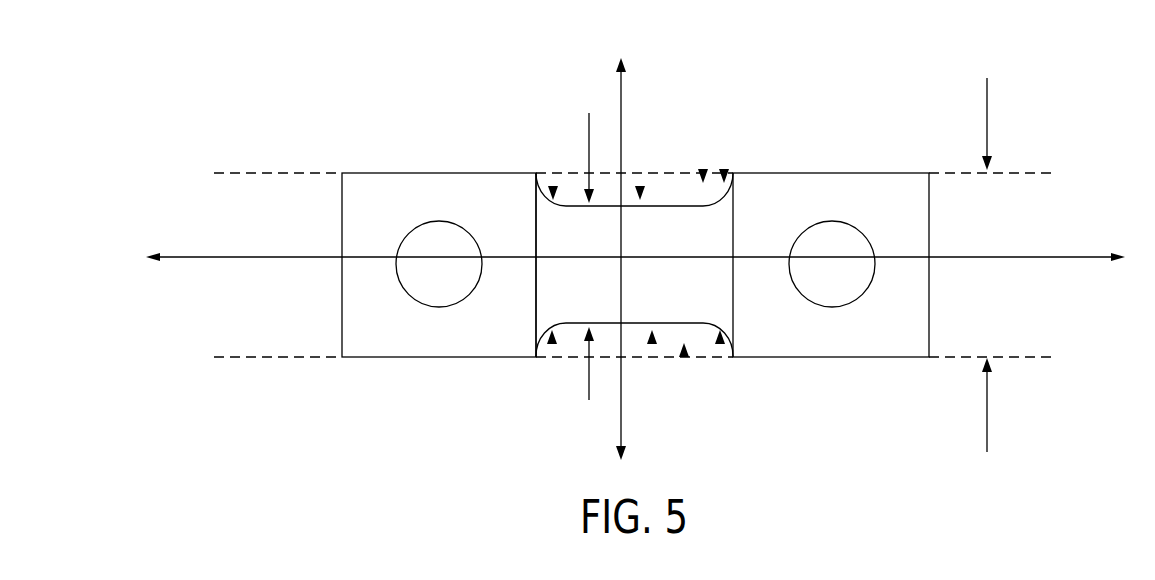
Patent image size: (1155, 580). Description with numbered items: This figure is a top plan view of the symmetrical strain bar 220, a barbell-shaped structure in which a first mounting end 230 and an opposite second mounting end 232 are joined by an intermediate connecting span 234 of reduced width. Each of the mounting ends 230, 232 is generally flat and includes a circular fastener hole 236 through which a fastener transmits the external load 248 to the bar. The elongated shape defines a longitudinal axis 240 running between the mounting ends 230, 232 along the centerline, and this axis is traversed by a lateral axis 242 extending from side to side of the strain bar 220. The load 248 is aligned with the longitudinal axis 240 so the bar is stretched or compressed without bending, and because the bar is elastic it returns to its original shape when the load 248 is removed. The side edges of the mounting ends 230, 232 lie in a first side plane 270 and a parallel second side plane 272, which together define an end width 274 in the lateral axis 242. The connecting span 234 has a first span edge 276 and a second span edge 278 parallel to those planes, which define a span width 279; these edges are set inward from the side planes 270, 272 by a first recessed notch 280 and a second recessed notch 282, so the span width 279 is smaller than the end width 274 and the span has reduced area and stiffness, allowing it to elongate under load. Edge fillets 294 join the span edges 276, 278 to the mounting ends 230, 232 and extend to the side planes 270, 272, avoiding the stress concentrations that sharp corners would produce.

The symmetrical strain bar 220 is at (445, 76).
The first mounting end 230 is at (373, 173).
The second mounting end 232 is at (882, 173).
The connecting span 234 is at (653, 237).
The fastener hole 236 is at (437, 307).
The longitudinal axis 240 is at (511, 257).
The lateral axis 242 is at (617, 76).
The load 248 is at (190, 257).
The first side plane 270 is at (975, 170).
The second side plane 272 is at (963, 360).
The end width 274 is at (990, 415).
The first span edge 276 is at (641, 186).
The second span edge 278 is at (651, 343).
The span width 279 is at (591, 375).
The first recessed notch 280 is at (702, 170).
The second recessed notch 282 is at (686, 357).
The edge fillet 294 is at (551, 186).